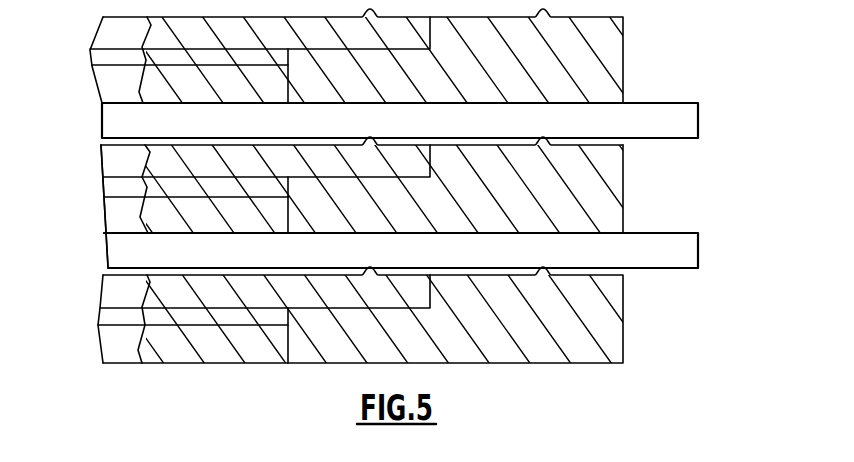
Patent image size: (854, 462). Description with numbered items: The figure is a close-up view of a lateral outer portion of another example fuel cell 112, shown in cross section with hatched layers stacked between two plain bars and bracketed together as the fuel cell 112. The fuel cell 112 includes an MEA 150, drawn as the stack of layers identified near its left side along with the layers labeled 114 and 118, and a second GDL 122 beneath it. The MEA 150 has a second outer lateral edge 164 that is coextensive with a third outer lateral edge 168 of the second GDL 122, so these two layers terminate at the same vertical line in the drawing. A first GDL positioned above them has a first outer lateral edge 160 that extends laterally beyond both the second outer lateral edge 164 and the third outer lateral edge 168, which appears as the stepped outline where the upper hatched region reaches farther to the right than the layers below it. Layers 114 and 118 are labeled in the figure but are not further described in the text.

The fuel cell 112 is at (718, 101).
The first layer 114 is at (122, 187).
The second layer 118 is at (112, 160).
The second GDL 122 is at (112, 217).
The MEA 150 is at (87, 197).
The first outer lateral edge 160 is at (430, 163).
The second outer lateral edge 164 is at (290, 188).
The third outer lateral edge 168 is at (289, 233).